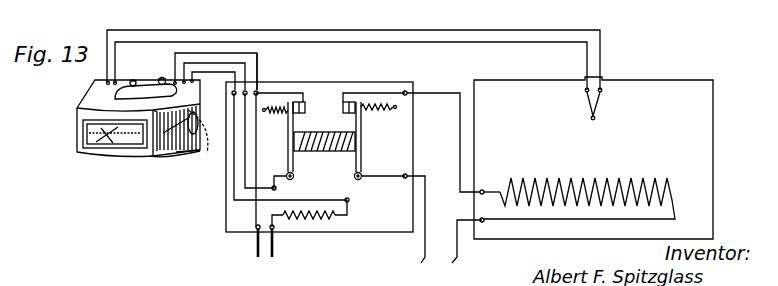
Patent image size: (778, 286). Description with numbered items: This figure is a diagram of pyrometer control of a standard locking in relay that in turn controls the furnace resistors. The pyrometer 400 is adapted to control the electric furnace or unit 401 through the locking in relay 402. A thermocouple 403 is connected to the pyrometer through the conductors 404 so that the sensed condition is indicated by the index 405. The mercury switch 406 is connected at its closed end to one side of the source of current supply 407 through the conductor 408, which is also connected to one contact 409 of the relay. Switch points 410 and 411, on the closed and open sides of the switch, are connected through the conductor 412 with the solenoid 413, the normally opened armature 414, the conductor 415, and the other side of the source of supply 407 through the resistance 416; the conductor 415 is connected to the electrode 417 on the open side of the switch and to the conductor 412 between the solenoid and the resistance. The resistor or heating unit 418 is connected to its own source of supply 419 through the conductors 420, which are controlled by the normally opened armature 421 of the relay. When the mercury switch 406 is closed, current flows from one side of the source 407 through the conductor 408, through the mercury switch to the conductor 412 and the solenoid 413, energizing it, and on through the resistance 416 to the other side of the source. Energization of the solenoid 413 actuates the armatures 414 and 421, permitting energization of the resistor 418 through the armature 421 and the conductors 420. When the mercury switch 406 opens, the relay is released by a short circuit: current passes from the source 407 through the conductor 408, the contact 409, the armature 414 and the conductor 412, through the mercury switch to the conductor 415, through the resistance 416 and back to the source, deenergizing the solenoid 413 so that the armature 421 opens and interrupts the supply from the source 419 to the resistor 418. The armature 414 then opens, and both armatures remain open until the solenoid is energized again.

The pyrometer 400 is at (157, 155).
The electric furnace or unit 401 is at (650, 90).
The locking in relay 402 is at (378, 227).
The thermocouple 403 is at (598, 107).
The conductors 404 is at (502, 38).
The index 405 is at (110, 137).
The mercury switch 406 is at (184, 161).
The source of current supply 407 is at (256, 249).
The conductor 408 is at (258, 58).
The contact 409 is at (305, 100).
The switch point 410 is at (169, 157).
The switch point 411 is at (207, 153).
The conductor 412 is at (217, 63).
The solenoid 413 is at (317, 153).
The normally opened armature 414 is at (292, 140).
The conductor 415 is at (245, 202).
The resistance 416 is at (322, 227).
The electrode 417 is at (190, 117).
The resistor or heating unit 418 is at (597, 178).
The source of supply 419 is at (444, 271).
The conductors 420 is at (425, 174).
The normally opened armature 421 is at (360, 142).